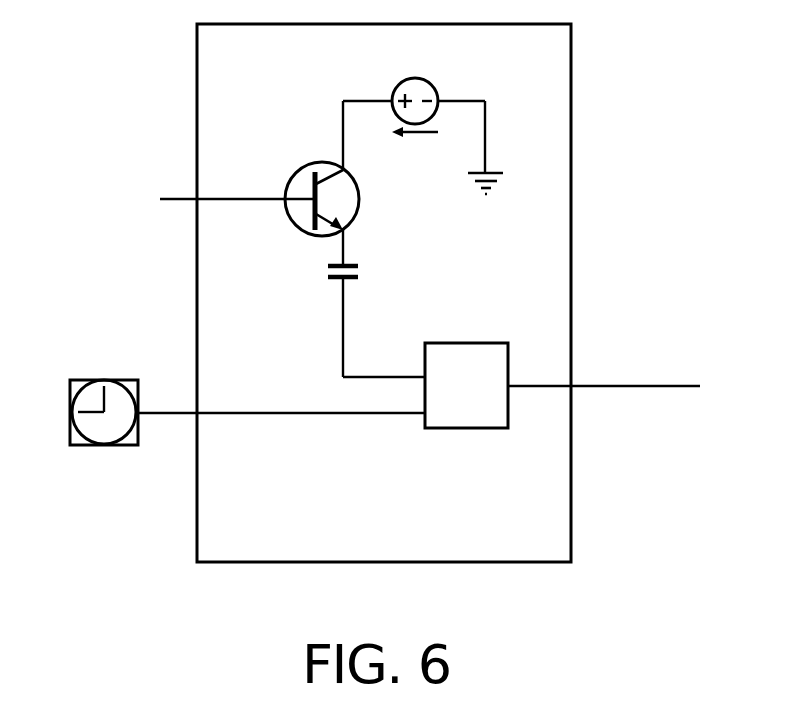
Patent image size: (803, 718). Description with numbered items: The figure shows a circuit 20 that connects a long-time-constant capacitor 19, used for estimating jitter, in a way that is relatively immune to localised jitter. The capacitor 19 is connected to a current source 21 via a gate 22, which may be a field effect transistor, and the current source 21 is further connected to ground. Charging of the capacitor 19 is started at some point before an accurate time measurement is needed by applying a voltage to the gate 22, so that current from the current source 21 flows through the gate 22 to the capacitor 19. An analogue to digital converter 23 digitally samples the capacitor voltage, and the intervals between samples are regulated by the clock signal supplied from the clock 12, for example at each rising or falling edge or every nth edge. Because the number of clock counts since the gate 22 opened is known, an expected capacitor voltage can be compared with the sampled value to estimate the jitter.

The clock 12 is at (118, 380).
The capacitor 19 is at (359, 268).
The circuit 20 is at (197, 167).
The current source 21 is at (415, 78).
The gate 22 is at (297, 165).
The analogue to digital converter 23 is at (463, 342).